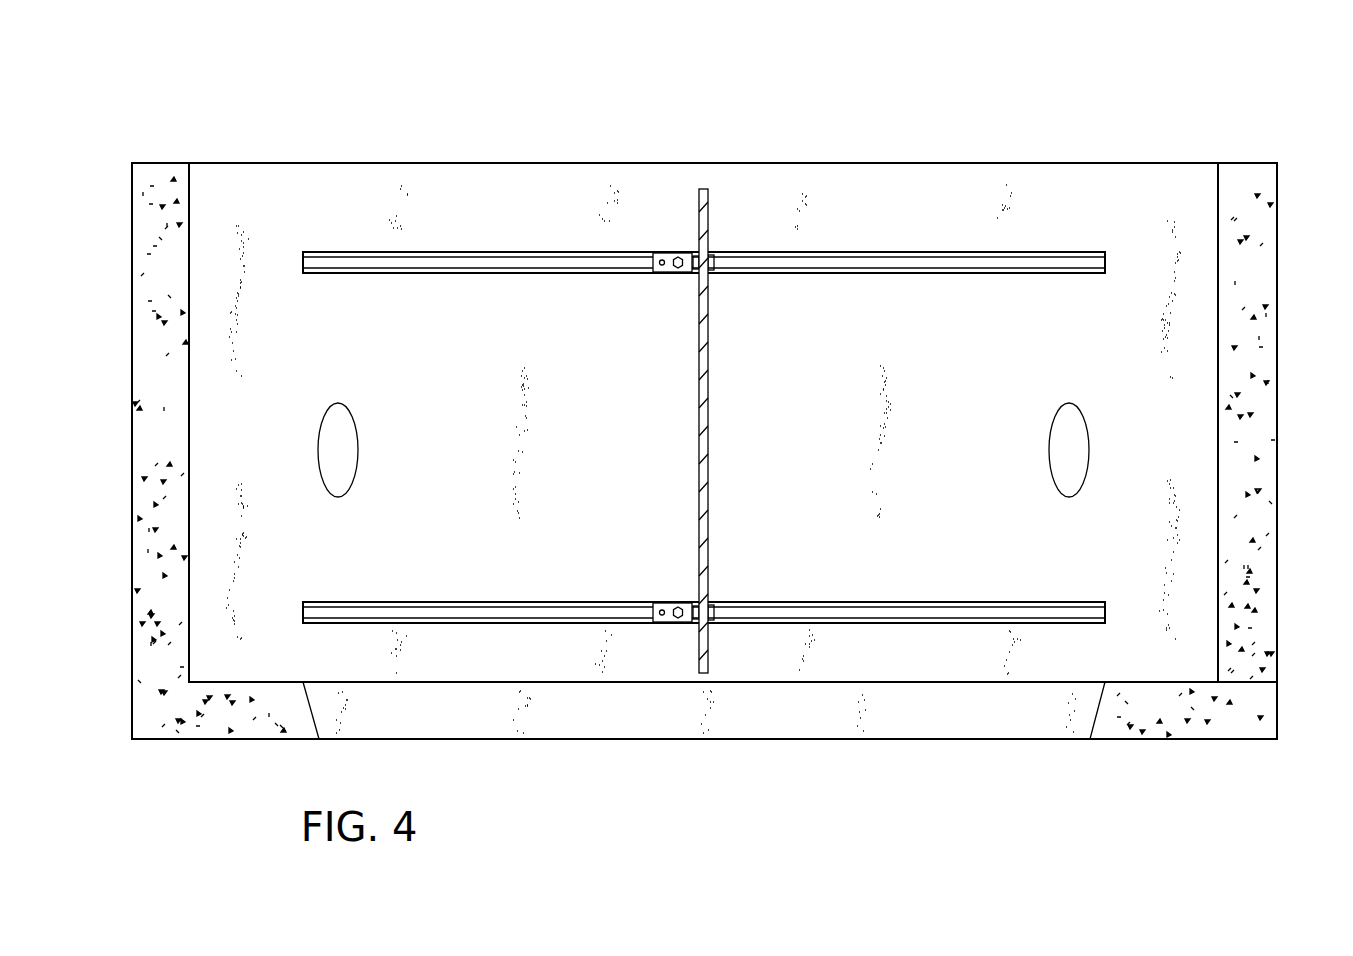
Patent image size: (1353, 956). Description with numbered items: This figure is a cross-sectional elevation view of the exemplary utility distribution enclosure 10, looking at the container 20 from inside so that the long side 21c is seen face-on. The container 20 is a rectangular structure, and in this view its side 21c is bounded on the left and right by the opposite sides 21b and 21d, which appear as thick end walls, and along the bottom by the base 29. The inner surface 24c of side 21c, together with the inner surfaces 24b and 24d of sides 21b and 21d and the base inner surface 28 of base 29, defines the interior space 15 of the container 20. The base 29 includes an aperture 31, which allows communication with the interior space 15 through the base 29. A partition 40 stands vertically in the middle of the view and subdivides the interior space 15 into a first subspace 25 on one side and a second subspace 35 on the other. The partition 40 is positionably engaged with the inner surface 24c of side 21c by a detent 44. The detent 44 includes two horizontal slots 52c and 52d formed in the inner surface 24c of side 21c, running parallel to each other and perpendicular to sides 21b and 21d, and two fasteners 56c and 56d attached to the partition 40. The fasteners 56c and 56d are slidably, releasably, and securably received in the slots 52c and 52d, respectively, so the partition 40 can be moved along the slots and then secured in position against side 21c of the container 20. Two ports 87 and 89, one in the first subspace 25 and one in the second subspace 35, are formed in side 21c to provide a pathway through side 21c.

The utility distribution enclosure 10 is at (1193, 87).
The interior space 15 is at (811, 347).
The container 20 is at (130, 452).
The side 21b is at (130, 528).
The side 21c is at (309, 187).
The side 21d is at (1272, 272).
The inner surface 24b is at (190, 334).
The inner surface 24c is at (418, 190).
The inner surface 24d is at (1222, 540).
The first subspace 25 is at (485, 463).
The base inner surface 28 is at (1153, 682).
The base 29 is at (1127, 713).
The aperture 31 is at (962, 707).
The second subspace 35 is at (933, 463).
The partition 40 is at (709, 428).
The detent 44 is at (850, 146).
The slot 52c is at (533, 265).
The slot 52d is at (533, 615).
The fastener 56c is at (672, 252).
The fastener 56d is at (670, 602).
The port 87 is at (338, 430).
The port 89 is at (1069, 430).